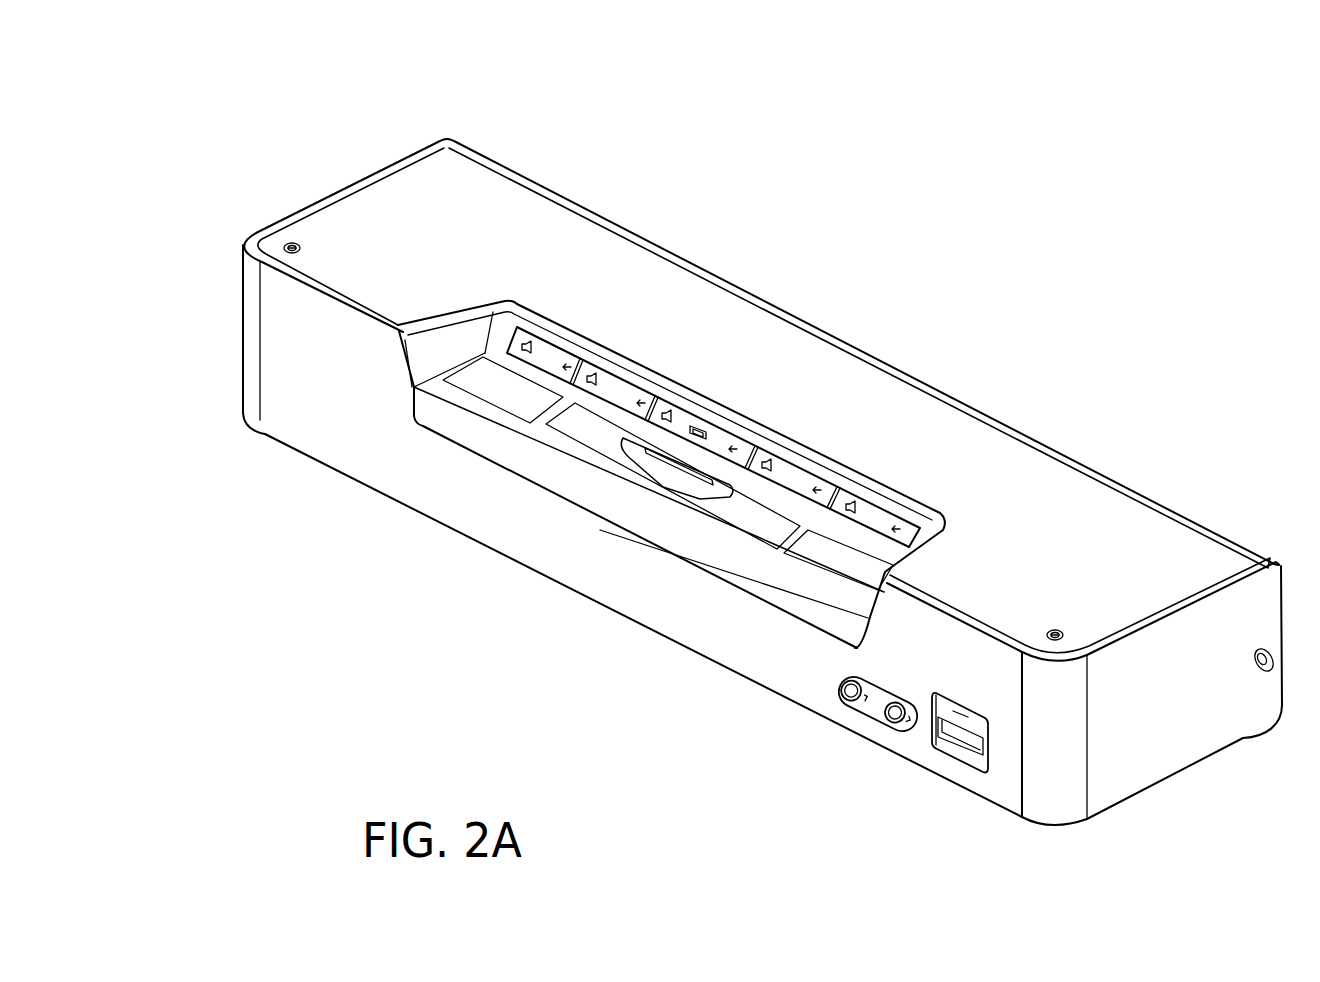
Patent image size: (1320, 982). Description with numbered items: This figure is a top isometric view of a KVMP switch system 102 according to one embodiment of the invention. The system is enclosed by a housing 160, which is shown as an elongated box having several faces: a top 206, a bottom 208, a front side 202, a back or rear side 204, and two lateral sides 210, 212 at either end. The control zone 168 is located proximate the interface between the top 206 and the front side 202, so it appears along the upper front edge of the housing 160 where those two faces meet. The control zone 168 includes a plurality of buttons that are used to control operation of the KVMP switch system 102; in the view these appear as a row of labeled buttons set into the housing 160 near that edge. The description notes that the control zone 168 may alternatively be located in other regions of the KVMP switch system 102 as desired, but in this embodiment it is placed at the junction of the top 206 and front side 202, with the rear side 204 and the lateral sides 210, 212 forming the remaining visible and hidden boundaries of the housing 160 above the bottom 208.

The KVMP switch system 102 is at (250, 183).
The front side 202 is at (287, 303).
The back or rear side 204 is at (712, 260).
The lateral side 212 is at (353, 177).
The housing 160 is at (1062, 530).
The top 206 is at (455, 283).
The control zone 168 is at (779, 421).
The bottom 208 is at (835, 738).
The lateral side 210 is at (1182, 733).